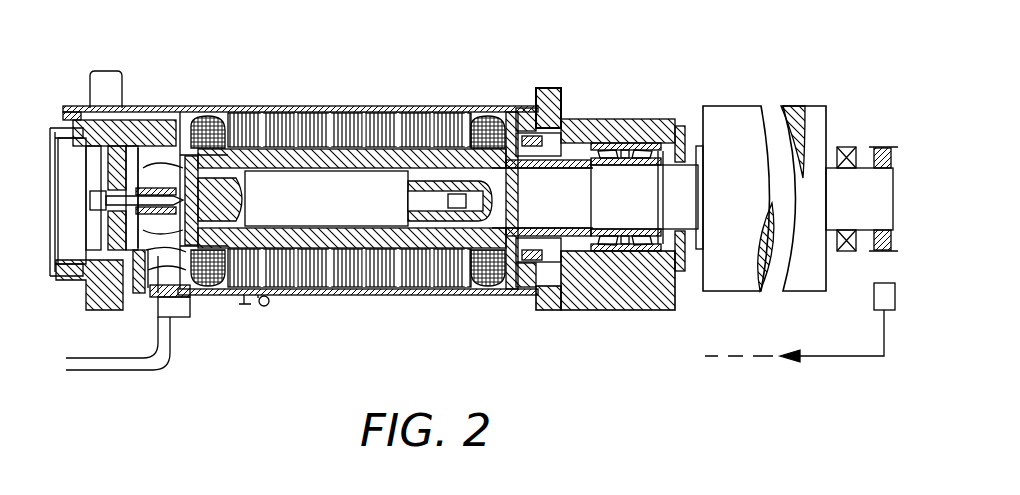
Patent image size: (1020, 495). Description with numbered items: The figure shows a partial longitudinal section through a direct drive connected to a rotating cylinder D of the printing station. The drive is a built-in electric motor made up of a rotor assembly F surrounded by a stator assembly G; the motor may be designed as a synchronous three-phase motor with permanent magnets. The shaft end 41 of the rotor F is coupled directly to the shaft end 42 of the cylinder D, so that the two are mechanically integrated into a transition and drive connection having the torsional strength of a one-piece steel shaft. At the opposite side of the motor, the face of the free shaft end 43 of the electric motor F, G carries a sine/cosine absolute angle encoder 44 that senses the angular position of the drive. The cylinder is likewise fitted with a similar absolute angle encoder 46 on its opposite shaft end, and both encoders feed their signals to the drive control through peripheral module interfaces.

The shaft end 41 is at (602, 180).
The shaft end 42 is at (675, 173).
The free shaft end 43 is at (153, 173).
The sine/cosine absolute angle encoder 44 is at (105, 155).
The absolute angle encoder 46 is at (867, 292).
The cylinder D is at (730, 115).
The rotor assembly F is at (345, 152).
The stator assembly G is at (405, 120).